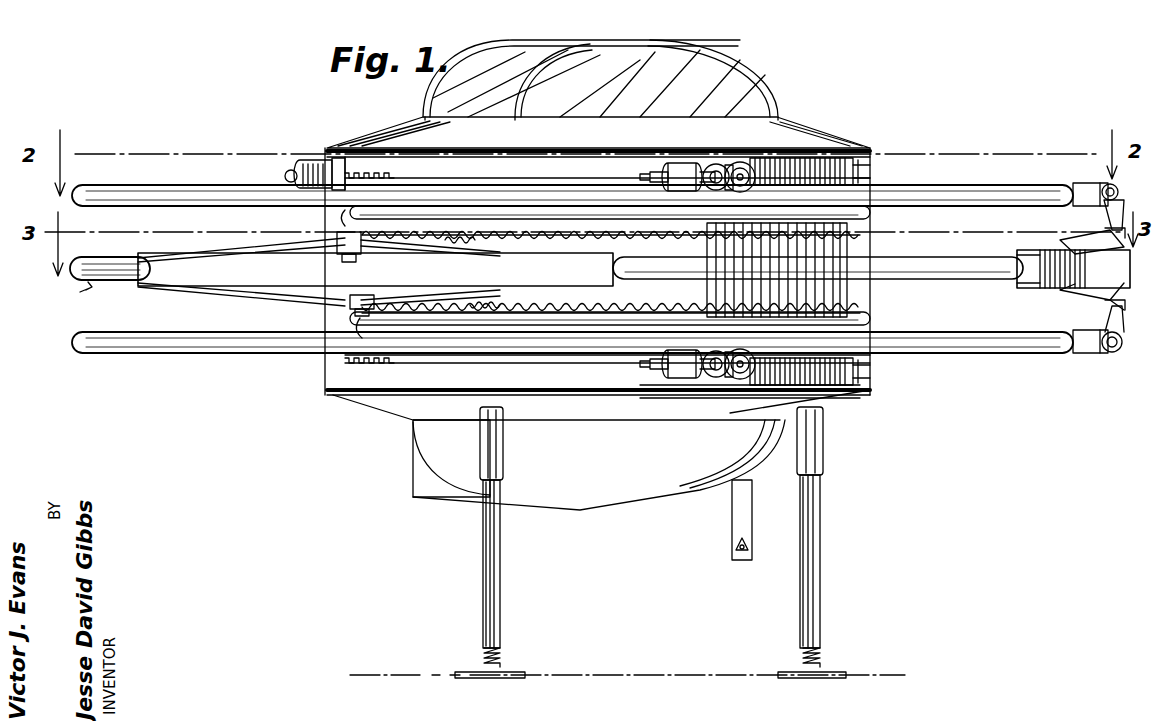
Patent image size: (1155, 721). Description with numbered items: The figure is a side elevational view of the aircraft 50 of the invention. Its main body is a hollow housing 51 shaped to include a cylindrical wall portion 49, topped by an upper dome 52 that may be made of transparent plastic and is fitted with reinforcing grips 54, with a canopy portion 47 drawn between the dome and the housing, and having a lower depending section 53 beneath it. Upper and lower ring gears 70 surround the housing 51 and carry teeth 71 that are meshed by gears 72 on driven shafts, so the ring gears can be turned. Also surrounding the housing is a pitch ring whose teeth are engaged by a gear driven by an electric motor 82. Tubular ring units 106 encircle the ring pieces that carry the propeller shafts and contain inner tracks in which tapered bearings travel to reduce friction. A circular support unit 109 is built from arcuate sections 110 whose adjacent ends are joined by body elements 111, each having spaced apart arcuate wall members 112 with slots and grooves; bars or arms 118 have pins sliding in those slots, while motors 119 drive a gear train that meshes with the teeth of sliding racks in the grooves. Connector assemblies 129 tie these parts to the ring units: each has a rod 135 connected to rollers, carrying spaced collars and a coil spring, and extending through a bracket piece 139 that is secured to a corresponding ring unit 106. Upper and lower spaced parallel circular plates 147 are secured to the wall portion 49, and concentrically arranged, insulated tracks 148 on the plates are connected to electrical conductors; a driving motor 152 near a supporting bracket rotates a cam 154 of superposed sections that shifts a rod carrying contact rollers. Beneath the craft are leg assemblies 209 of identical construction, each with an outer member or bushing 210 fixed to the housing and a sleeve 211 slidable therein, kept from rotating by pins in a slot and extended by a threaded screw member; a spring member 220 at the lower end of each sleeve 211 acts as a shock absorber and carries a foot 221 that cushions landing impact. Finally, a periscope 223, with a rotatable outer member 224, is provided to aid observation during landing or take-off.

The canopy 47 is at (396, 147).
The cylindrical wall portion 49 is at (597, 271).
The aircraft 50 is at (838, 300).
The hollow housing 51 is at (835, 250).
The upper dome 52 is at (762, 67).
The lower depending section 53 is at (662, 505).
The reinforcing grips 54 is at (446, 72).
The ring gears 70 is at (640, 258).
The teeth 71 is at (720, 232).
The gears 72 is at (500, 252).
The electric motor 82 is at (311, 158).
The tubular ring units 106 is at (198, 197).
The circular support unit 109 is at (80, 292).
The arcuate sections 110 is at (118, 264).
The body elements 111 is at (198, 298).
The arcuate wall members 112 is at (250, 284).
The bars or arms 118 is at (290, 236).
The motors 119 is at (940, 254).
The connector assemblies 129 is at (1110, 232).
The rod 135 is at (1108, 208).
The bracket piece 139 is at (1122, 206).
The circular plates 147 is at (742, 402).
The tracks 148 is at (560, 405).
The driving motor 152 is at (682, 163).
The cam 154 is at (736, 163).
The leg assemblies 209 is at (480, 550).
The outer member or bushing 210 is at (505, 472).
The sleeve 211 is at (490, 615).
The spring member 220 is at (484, 660).
The foot 221 is at (528, 690).
The periscope 223 is at (763, 547).
The outer member or element 224 is at (732, 520).